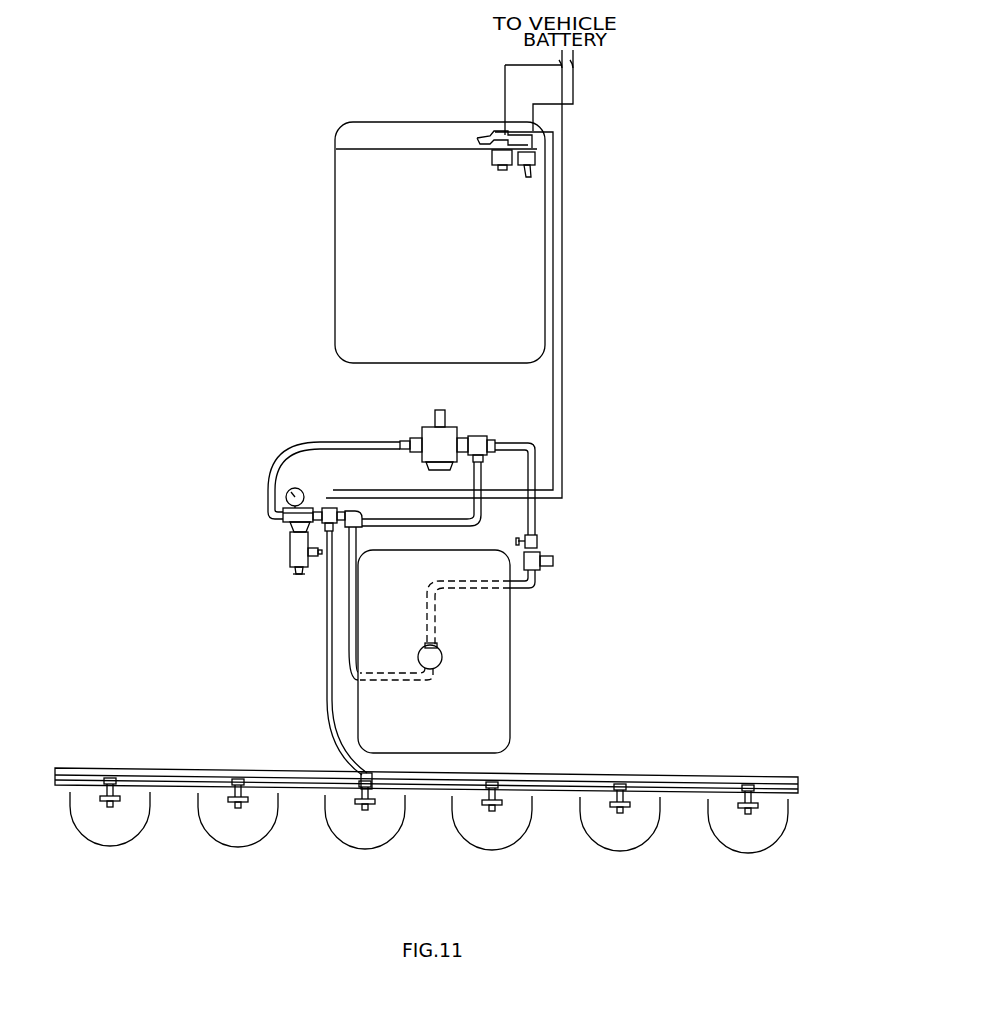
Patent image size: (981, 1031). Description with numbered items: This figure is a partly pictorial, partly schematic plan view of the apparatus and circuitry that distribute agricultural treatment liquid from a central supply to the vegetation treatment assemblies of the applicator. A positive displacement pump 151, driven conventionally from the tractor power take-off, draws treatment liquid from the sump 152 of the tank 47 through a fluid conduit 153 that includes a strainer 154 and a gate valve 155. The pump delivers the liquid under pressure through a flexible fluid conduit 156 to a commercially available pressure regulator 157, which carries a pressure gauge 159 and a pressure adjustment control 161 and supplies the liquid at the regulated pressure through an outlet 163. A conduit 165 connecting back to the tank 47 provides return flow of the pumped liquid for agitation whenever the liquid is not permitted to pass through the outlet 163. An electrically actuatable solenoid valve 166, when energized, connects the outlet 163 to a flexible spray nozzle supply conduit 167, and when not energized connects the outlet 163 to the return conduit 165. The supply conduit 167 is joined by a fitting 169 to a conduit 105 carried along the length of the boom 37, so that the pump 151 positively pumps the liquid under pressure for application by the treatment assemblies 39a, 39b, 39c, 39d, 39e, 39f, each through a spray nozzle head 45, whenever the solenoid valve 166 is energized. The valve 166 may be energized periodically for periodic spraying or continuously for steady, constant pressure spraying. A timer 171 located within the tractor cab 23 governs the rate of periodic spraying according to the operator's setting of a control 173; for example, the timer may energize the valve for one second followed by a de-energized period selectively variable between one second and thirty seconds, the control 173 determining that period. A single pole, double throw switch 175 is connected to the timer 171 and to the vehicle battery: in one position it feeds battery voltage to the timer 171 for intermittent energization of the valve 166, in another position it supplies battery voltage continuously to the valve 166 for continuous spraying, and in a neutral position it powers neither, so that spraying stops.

The tractor cab 23 is at (540, 208).
The timer 171 is at (492, 157).
The control 173 is at (503, 168).
The single pole, double throw switch 175 is at (527, 172).
The flexible fluid conduit 156 is at (312, 442).
The pump 151 is at (445, 428).
The pressure gauge 159 is at (302, 490).
The pressure regulator 157 is at (283, 521).
The outlet 163 is at (313, 525).
The pressure adjustment control 161 is at (297, 573).
The solenoid valve 166 is at (360, 508).
The fluid conduit 153 is at (536, 515).
The gate valve 155 is at (540, 540).
The strainer 154 is at (553, 560).
The sump 152 is at (450, 650).
The tank 47 is at (507, 641).
The conduit 165 is at (346, 597).
The flexible spray nozzle supply conduit 167 is at (328, 700).
The fitting 169 is at (371, 775).
The conduit 105 is at (432, 783).
The boom 37 is at (598, 776).
The spray nozzle head 45 is at (105, 812).
The treatment assembly 39a is at (728, 858).
The treatment assembly 39b is at (612, 858).
The treatment assembly 39c is at (484, 857).
The treatment assembly 39d is at (357, 856).
The treatment assembly 39e is at (230, 855).
The treatment assembly 39f is at (102, 854).